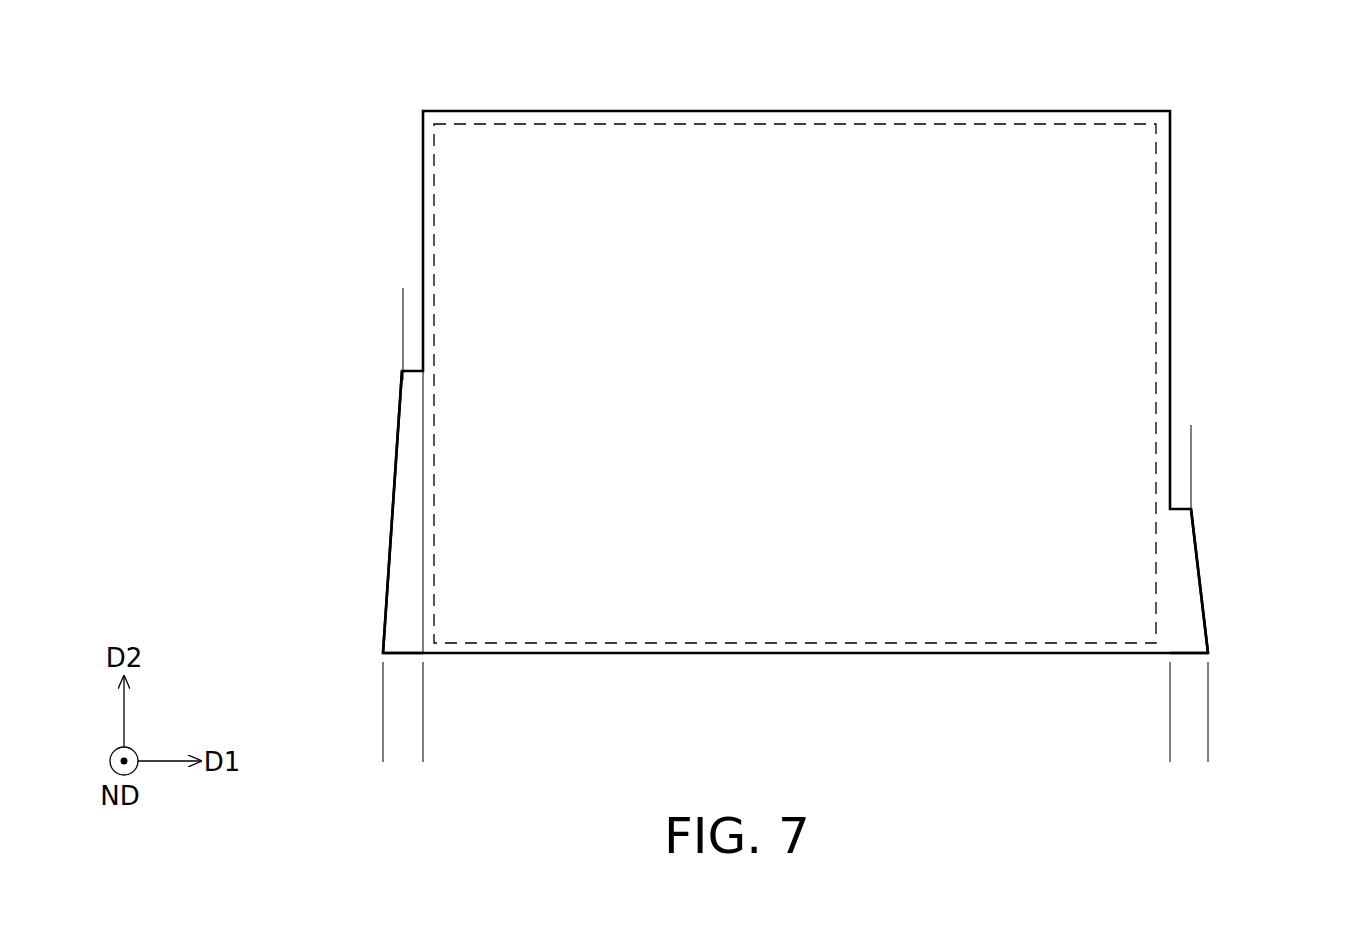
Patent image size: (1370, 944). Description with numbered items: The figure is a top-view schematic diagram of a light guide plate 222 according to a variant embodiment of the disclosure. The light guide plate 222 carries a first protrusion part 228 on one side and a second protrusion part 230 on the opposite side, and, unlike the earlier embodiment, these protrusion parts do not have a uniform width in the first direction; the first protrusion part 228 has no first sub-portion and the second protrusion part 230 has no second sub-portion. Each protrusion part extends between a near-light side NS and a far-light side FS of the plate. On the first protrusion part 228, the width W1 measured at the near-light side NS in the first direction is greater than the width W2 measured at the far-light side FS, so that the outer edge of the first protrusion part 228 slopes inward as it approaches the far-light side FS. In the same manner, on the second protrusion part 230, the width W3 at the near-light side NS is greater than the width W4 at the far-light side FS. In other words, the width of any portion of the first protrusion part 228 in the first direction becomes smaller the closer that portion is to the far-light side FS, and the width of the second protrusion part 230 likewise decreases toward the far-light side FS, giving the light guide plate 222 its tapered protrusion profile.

The light guide plate 222 is at (1233, 112).
The first protrusion part 228 is at (406, 512).
The second protrusion part 230 is at (1183, 570).
The far-light side FS is at (412, 368).
The near-light side NS is at (413, 655).
The width of the first protrusion part at the near-light side W1 is at (460, 747).
The width of the first protrusion part at the far-light side W2 is at (460, 302).
The width of the second protrusion part at the near-light side W3 is at (1133, 747).
The width of the second protrusion part at the far-light side W4 is at (1134, 442).